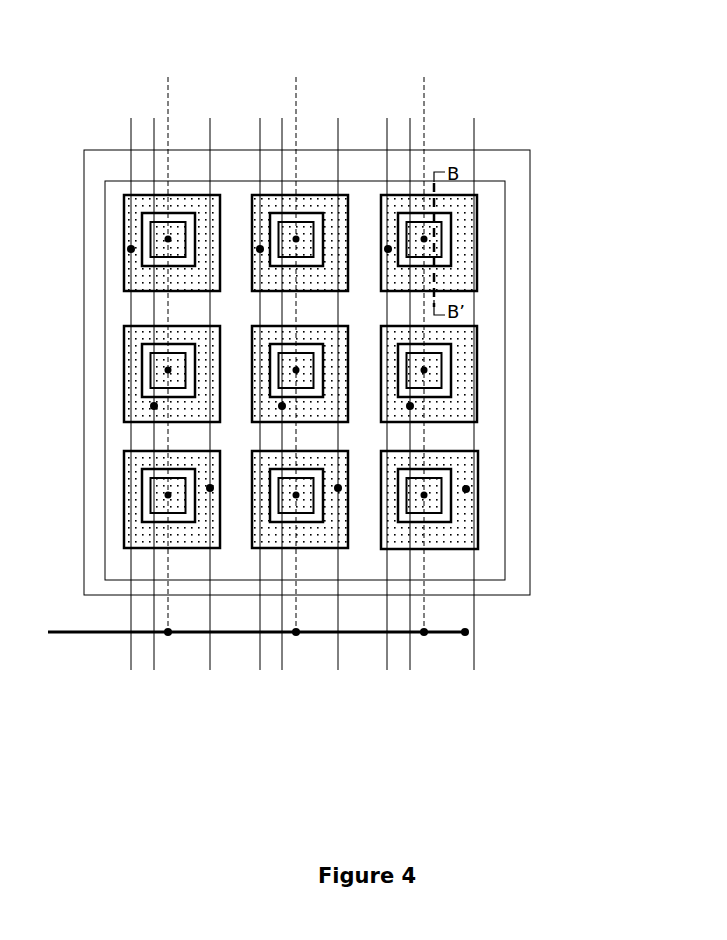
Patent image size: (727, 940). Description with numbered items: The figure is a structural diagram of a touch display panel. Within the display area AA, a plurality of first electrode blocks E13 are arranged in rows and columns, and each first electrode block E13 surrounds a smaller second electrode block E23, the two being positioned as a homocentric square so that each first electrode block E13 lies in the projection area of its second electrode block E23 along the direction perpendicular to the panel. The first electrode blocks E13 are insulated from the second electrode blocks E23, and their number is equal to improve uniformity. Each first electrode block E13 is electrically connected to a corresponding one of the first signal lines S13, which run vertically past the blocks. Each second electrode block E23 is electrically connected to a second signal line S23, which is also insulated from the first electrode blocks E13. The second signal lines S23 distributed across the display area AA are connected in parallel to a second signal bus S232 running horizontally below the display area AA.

The first electrode block E13 is at (167, 206).
The second electrode block E23 is at (166, 237).
The second signal line S23 is at (295, 343).
The first signal line S13 is at (210, 674).
The second signal bus S232 is at (100, 633).
The display area AA is at (505, 309).